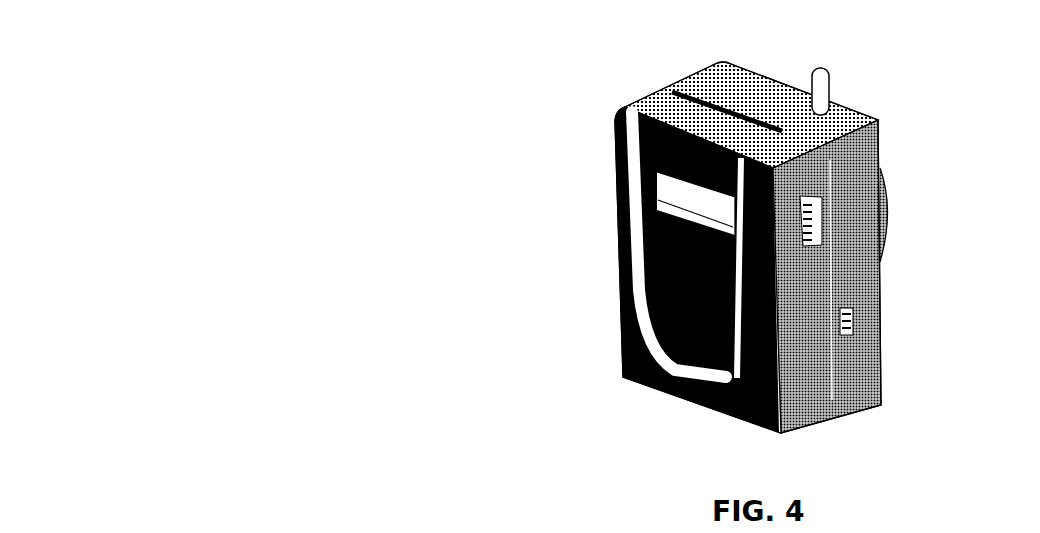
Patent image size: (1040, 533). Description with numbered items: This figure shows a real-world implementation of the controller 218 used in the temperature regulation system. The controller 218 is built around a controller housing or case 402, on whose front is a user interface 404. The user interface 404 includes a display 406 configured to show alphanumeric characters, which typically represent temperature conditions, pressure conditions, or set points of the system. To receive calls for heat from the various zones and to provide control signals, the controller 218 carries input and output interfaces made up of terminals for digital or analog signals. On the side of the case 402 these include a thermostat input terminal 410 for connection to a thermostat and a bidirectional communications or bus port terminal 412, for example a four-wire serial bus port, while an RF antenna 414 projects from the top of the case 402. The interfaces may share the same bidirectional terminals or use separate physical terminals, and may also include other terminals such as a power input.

The controller 218 is at (457, 47).
The controller housing 402 is at (705, 72).
The user interface 404 is at (600, 152).
The display 406 is at (668, 196).
The thermostat input terminal 410 is at (852, 310).
The bus port terminal 412 is at (813, 229).
The RF antenna 414 is at (831, 89).